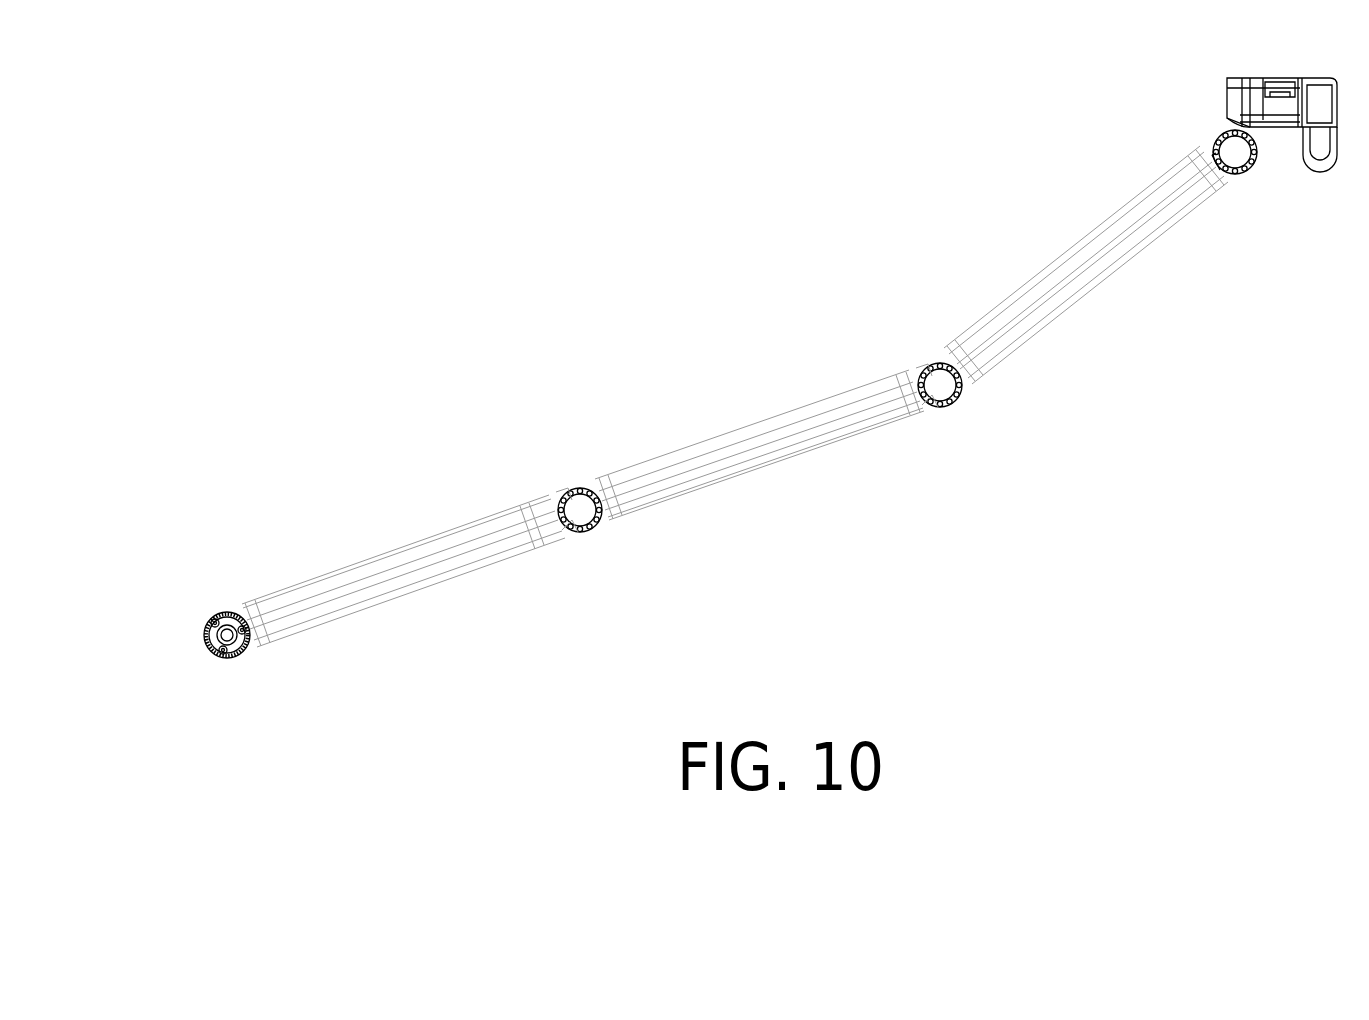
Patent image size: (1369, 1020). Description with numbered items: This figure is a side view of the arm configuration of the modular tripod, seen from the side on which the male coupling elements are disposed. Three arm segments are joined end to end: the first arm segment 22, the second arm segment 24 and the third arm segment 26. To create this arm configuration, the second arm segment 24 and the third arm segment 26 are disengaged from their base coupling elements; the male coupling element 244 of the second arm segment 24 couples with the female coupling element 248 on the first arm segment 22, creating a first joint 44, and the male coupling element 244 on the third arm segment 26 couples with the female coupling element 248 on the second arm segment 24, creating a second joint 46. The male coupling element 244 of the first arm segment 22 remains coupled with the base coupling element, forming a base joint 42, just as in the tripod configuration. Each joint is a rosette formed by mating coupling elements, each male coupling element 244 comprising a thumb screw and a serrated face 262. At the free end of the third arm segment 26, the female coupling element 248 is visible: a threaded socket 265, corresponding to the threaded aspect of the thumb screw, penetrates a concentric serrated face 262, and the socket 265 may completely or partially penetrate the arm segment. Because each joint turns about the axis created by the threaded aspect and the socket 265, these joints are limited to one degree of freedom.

The first arm segment 22 is at (1132, 226).
The second arm segment 24 is at (810, 360).
The third arm segment 26 is at (445, 540).
The male coupling element 244 is at (1235, 152).
The base joint 42 is at (1258, 160).
The first joint 44 is at (952, 408).
The second joint 46 is at (593, 540).
The female coupling element 248 is at (205, 605).
The threaded socket 265 is at (222, 637).
The serrated face 262 is at (222, 660).